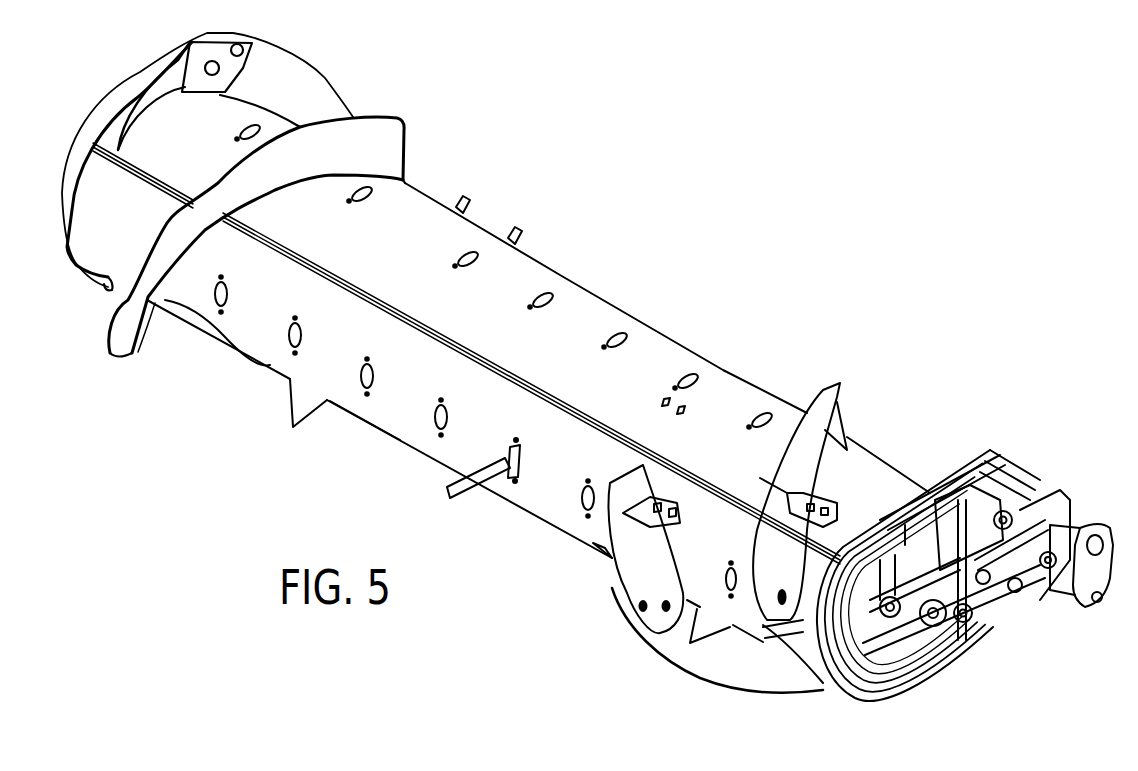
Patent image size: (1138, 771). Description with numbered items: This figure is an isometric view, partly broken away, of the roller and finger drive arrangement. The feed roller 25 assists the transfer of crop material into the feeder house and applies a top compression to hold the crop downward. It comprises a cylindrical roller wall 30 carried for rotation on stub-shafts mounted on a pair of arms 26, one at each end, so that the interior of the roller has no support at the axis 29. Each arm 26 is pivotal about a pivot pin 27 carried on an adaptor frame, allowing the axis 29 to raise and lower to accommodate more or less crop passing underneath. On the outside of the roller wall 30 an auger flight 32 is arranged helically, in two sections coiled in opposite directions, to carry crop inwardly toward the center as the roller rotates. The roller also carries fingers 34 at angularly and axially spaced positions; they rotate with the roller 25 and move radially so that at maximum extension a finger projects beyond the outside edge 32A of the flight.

The feed roller 25 is at (542, 506).
The arms 26 is at (939, 455).
The pivot pin 27 is at (1118, 538).
The axis 29 is at (1022, 683).
The roller wall 30 is at (396, 423).
The auger flight 32 is at (123, 357).
The outside edge of the flight 32A is at (623, 603).
The fingers 34 is at (461, 493).